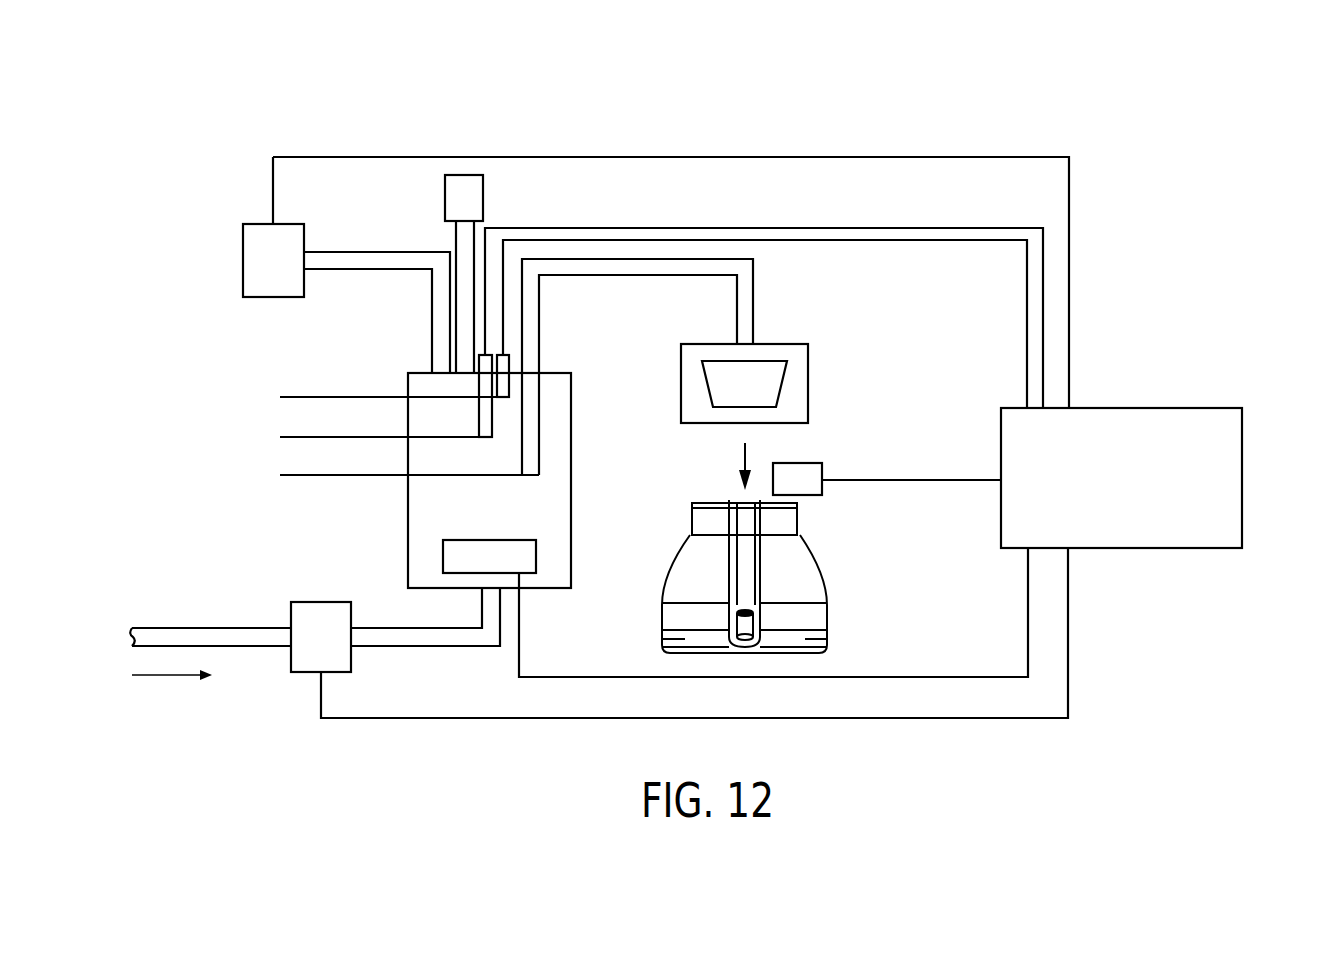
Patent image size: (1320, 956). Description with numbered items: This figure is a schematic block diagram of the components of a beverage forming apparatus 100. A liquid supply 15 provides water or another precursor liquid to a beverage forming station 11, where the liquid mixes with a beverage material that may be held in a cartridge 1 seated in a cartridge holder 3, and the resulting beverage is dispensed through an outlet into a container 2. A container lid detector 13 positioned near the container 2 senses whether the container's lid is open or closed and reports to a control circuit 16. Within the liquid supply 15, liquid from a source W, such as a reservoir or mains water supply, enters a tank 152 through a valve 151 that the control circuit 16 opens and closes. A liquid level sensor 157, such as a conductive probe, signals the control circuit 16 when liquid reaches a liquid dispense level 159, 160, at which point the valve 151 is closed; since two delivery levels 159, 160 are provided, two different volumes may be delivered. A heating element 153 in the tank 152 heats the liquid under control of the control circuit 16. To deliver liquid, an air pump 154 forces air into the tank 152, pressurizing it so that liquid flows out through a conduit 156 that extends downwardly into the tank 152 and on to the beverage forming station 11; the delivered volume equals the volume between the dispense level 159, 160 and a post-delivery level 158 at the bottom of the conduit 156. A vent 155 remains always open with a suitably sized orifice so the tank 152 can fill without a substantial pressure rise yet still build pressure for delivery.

The beverage forming apparatus 100 is at (252, 122).
The cartridge 1 is at (762, 373).
The container 2 is at (803, 568).
The cartridge holder 3 is at (794, 387).
The beverage forming station 11 is at (856, 340).
The container lid detector 13 is at (802, 483).
The liquid supply 15 is at (282, 511).
The control circuit 16 is at (1223, 438).
The valve 151 is at (320, 613).
The tank 152 is at (558, 487).
The heating element 153 is at (493, 557).
The air pump 154 is at (262, 272).
The vent 155 is at (458, 202).
The conduit 156 is at (530, 328).
The liquid level sensor 157 is at (503, 381).
The post-delivery level 158 is at (305, 475).
The liquid dispense level 159 is at (305, 437).
The liquid dispense level 160 is at (305, 397).
The source W is at (265, 637).